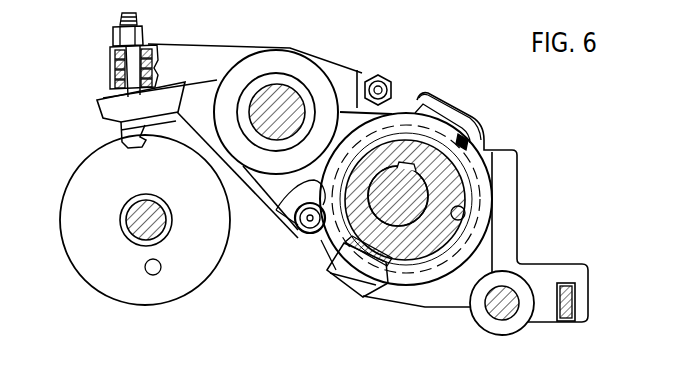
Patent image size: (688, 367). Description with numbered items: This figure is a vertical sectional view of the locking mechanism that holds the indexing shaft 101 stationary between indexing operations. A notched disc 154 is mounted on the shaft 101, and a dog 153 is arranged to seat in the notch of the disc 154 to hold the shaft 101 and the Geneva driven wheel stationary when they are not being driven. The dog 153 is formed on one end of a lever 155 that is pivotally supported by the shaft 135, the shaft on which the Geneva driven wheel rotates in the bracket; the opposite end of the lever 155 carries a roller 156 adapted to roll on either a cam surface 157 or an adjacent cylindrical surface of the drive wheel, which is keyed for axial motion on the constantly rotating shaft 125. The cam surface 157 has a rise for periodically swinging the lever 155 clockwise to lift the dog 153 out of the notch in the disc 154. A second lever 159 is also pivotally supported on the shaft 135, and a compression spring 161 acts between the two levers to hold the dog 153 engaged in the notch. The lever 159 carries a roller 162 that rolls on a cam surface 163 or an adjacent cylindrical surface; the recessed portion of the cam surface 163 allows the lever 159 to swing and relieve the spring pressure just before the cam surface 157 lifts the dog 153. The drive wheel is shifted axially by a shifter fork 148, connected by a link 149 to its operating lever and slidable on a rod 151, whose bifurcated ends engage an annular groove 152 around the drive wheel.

The shaft 101 is at (136, 227).
The shaft 125 is at (418, 193).
The shaft 135 is at (287, 110).
The shifter fork 148 is at (507, 236).
The link 149 is at (565, 318).
The rod 151 is at (497, 308).
The annular groove 152 is at (374, 278).
The dog 153 is at (128, 143).
The disc 154 is at (76, 208).
The lever 155 is at (109, 112).
The roller 156 is at (305, 233).
The cam surface 157 is at (300, 204).
The second lever 159 is at (209, 58).
The compression spring 161 is at (118, 68).
The roller 162 is at (383, 78).
The cam surface 163 is at (403, 110).